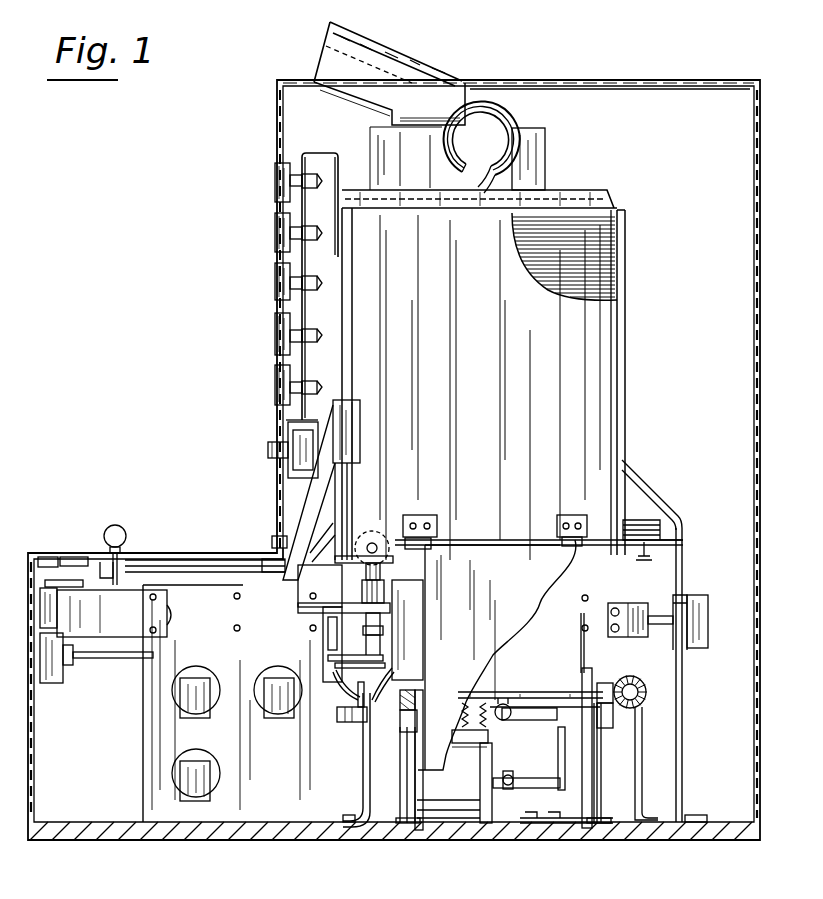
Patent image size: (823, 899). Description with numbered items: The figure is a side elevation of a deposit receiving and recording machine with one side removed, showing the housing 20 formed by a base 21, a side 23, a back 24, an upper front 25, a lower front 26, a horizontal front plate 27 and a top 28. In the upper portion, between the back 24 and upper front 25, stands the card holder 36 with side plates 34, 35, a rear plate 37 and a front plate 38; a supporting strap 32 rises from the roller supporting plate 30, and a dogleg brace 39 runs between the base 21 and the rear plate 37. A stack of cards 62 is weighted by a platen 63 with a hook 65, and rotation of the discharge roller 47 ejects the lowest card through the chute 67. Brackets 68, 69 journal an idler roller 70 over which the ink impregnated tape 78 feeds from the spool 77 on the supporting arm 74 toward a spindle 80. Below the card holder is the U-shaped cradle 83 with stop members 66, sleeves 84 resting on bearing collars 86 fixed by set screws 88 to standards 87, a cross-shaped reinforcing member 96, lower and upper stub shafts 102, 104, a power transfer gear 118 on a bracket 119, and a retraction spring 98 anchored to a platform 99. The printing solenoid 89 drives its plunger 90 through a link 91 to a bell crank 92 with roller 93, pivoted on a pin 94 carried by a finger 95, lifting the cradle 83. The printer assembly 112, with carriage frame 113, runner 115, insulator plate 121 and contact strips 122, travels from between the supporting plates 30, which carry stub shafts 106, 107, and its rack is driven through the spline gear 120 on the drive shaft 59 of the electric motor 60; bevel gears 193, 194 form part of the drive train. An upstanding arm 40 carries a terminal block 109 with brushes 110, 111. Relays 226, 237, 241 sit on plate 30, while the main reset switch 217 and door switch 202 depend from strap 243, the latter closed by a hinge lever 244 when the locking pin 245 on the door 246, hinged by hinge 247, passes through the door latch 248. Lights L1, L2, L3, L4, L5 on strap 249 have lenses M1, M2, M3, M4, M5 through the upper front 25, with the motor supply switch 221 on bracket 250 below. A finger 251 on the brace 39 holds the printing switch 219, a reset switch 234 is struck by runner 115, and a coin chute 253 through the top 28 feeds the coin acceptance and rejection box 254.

The housing 20 is at (650, 76).
The base 21 is at (428, 841).
The side 23 is at (585, 90).
The back 24 is at (757, 293).
The upper front 25 is at (277, 149).
The lower front 26 is at (30, 770).
The horizontal front plate 27 is at (52, 557).
The top 28 is at (532, 85).
The roller supporting plate 30 is at (144, 726).
The supporting strap 32 is at (312, 644).
The side plate 34 is at (607, 353).
The side plate 35 is at (625, 213).
The card holder 36 is at (623, 240).
The rear plate 37 is at (623, 383).
The front plate 38 is at (343, 257).
The dogleg brace 39 is at (681, 731).
The upstanding arm 40 is at (364, 774).
The discharge roller 47 is at (376, 536).
The drive shaft 59 is at (383, 590).
The electric motor 60 is at (360, 730).
The cards 62 is at (615, 282).
The platen 63 is at (605, 191).
The hook 65 is at (508, 126).
The stop member 66 is at (628, 607).
The chute 67 is at (273, 536).
The bracket 68 is at (425, 516).
The bracket 69 is at (573, 516).
The idler roller 70 is at (432, 541).
The supporting arm 74 is at (599, 778).
The spool 77 is at (580, 641).
The ink impregnated tape 78 is at (467, 546).
The spindle 80 is at (606, 716).
The cradle 83 is at (572, 588).
The sleeve 84 is at (400, 706).
The bearing collar 86 is at (400, 730).
The standard 87 is at (403, 763).
The set screw 88 is at (419, 708).
The printing solenoid 89 is at (479, 771).
The plunger 90 is at (506, 784).
The link 91 is at (540, 789).
The bell crank 92 is at (556, 752).
The roller 93 is at (508, 699).
The pin 94 is at (550, 717).
The finger 95 is at (579, 706).
The cross-shaped reinforcing member 96 is at (480, 694).
The retraction spring 98 is at (436, 697).
The platform 99 is at (470, 746).
The lower stub shaft 102 is at (582, 630).
The upper stub shaft 104 is at (582, 600).
The lower stub shaft 106 is at (240, 632).
The upper stub shaft 107 is at (235, 599).
The terminal block 109 is at (358, 701).
The brushes 110 is at (337, 676).
The brushes 111 is at (390, 670).
The printer assembly 112 is at (216, 561).
The carriage frame 113 is at (140, 647).
The runner 115 is at (335, 624).
The power transfer gear 118 is at (388, 607).
The bracket 119 is at (390, 620).
The spline gear 120 is at (352, 598).
The insulator plate 121 is at (326, 659).
The contact strips 122 is at (332, 667).
The bevel gear 193 is at (642, 762).
The bevel gear 194 is at (631, 677).
The door switch 202 is at (58, 628).
The main reset switch 217 is at (63, 672).
The printing switch 219 is at (708, 617).
The motor supply switch 221 is at (297, 463).
The relay 226 is at (208, 680).
The reset switch 234 is at (656, 520).
The relay 237 is at (277, 722).
The relay 241 is at (216, 752).
The strap 243 is at (168, 622).
The hinge lever 244 is at (80, 586).
The locking pin 245 is at (126, 535).
The door 246 is at (130, 558).
The hinge 247 is at (263, 564).
The door latch 248 is at (100, 558).
The strap 249 is at (338, 156).
The bracket 250 is at (289, 432).
The finger 251 is at (688, 596).
The coin chute 253 is at (398, 57).
The coin acceptance and rejection box 254 is at (537, 163).
The lens M1 is at (275, 385).
The lens M2 is at (275, 333).
The lens M3 is at (275, 287).
The lens M4 is at (275, 238).
The lens M5 is at (274, 186).
The light L1 is at (316, 386).
The light L2 is at (316, 329).
The light L3 is at (316, 285).
The light L4 is at (316, 238).
The light L5 is at (312, 189).